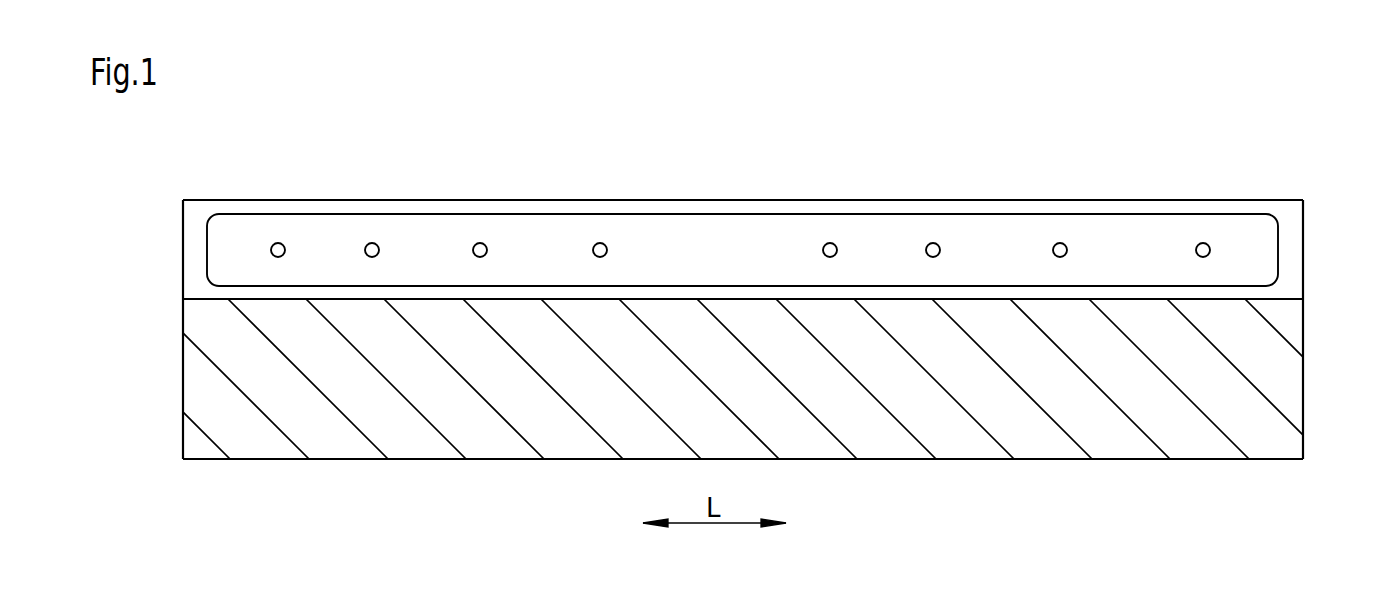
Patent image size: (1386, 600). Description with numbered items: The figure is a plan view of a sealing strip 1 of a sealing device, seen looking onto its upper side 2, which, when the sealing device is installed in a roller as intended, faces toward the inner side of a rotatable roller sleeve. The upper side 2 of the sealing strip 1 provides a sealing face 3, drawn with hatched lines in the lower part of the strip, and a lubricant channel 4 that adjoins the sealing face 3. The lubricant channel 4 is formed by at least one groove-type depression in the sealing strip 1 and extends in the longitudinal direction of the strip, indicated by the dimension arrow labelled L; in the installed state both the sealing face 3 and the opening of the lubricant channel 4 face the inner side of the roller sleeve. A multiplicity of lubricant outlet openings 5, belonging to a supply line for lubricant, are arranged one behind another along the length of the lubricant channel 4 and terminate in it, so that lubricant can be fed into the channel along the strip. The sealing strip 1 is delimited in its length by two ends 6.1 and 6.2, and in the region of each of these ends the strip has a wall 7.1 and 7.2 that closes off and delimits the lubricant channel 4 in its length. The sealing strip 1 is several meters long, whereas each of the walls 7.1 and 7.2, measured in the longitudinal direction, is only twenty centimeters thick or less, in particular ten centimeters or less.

The sealing strip 1 is at (728, 318).
The upper side 2 is at (744, 214).
The sealing face 3 is at (330, 424).
The lubricant channel 4 is at (313, 243).
The lubricant outlet openings 5 is at (481, 245).
The end 6.1 is at (183, 226).
The end 6.2 is at (1303, 226).
The wall 7.1 is at (195, 273).
The wall 7.2 is at (1290, 265).